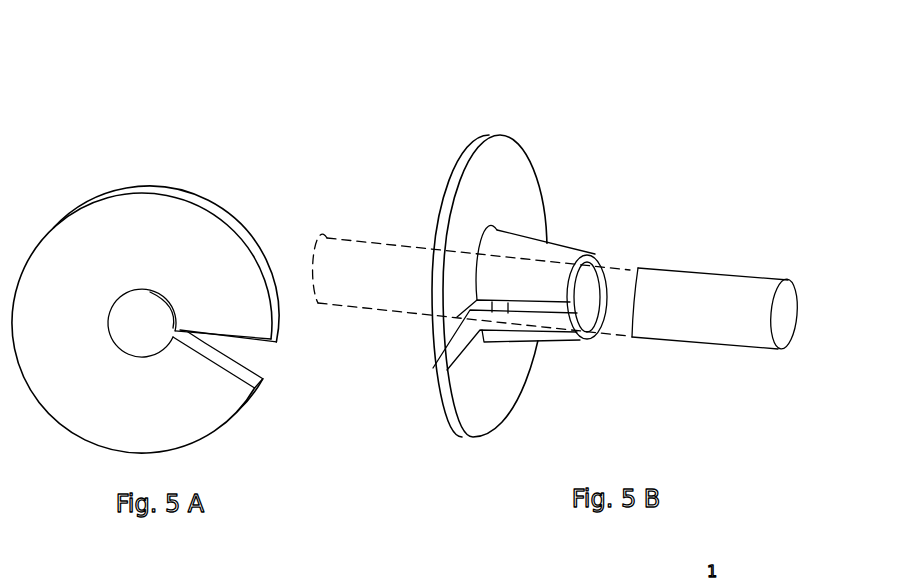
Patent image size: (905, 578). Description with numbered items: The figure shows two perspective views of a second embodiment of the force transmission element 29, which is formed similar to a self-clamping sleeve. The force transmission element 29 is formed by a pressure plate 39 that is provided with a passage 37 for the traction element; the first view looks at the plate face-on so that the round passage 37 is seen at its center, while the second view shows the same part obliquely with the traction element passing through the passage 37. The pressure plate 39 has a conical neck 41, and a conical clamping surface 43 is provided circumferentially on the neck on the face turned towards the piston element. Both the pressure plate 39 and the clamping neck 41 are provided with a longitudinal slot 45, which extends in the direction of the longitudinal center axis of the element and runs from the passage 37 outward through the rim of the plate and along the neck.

In FIG. 5A, the force transmission element 29 is at (204, 169).
In FIG. 5B, the force transmission element 29 is at (559, 154).
In FIG. 5A, the passage 37 is at (136, 326).
In FIG. 5B, the passage 37 is at (588, 297).
In FIG. 5A, the pressure plate 39 is at (105, 223).
In FIG. 5B, the pressure plate 39 is at (458, 183).
In FIG. 5B, the conical neck 41 is at (570, 241).
In FIG. 5B, the conical clamping surface 43 is at (563, 248).
In FIG. 5A, the longitudinal slot 45 is at (240, 352).
In FIG. 5B, the longitudinal slot 45 is at (550, 320).